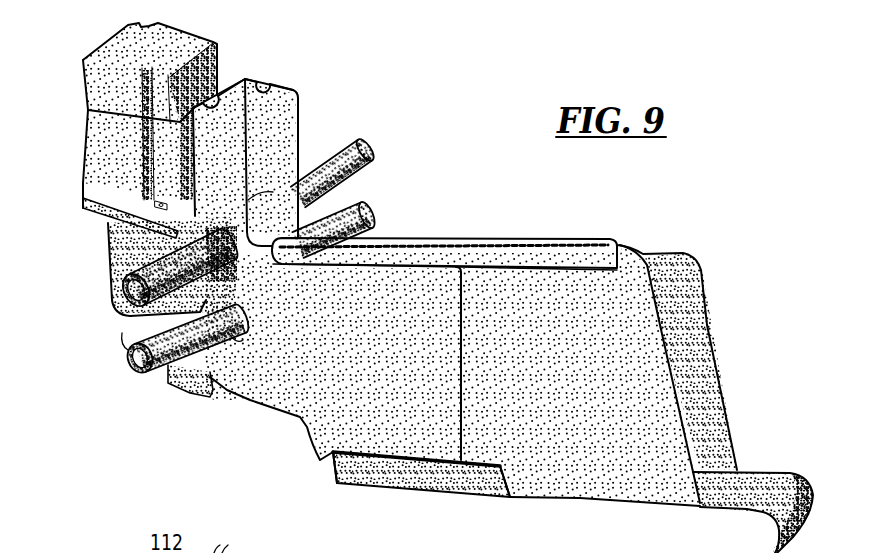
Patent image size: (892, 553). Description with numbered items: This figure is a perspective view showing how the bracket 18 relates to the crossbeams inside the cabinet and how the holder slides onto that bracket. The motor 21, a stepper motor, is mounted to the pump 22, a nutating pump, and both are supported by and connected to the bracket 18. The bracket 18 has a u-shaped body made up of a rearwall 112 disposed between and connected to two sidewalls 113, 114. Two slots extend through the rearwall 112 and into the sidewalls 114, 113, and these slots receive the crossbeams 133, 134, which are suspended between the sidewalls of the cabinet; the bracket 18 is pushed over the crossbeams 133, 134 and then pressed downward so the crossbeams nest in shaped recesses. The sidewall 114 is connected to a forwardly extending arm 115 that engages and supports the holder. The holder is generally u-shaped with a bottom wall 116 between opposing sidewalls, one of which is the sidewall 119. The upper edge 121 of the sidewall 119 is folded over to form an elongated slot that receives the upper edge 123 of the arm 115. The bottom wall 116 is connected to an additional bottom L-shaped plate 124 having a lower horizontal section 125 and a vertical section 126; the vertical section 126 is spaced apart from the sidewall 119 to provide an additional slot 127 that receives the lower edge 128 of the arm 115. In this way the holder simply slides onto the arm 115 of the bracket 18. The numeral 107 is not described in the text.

The motor 21 is at (170, 43).
The pump 22 is at (103, 242).
The bracket 18 is at (260, 76).
The rearwall 112 is at (229, 102).
The sidewall 113 is at (273, 107).
The sidewall 114 is at (233, 167).
The crossbeam 133 is at (375, 145).
The crossbeam 134 is at (375, 203).
The arm 115 is at (293, 360).
The upper edge 121 is at (543, 240).
The upper edge 123 is at (477, 247).
The sidewall 119 is at (622, 293).
The bottom wall 116 is at (740, 487).
The vertical section 126 is at (367, 470).
The lower edge 128 is at (327, 468).
The lower horizontal section 125 is at (503, 493).
The additional slot 127 is at (405, 452).
The L-shaped plate 124 is at (418, 491).
The adjacent component 107 is at (232, 536).